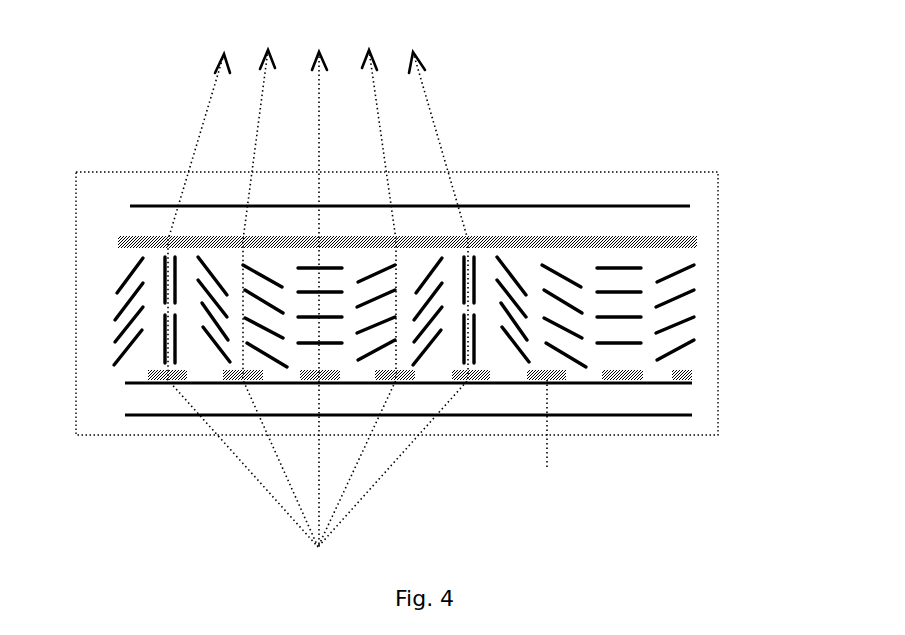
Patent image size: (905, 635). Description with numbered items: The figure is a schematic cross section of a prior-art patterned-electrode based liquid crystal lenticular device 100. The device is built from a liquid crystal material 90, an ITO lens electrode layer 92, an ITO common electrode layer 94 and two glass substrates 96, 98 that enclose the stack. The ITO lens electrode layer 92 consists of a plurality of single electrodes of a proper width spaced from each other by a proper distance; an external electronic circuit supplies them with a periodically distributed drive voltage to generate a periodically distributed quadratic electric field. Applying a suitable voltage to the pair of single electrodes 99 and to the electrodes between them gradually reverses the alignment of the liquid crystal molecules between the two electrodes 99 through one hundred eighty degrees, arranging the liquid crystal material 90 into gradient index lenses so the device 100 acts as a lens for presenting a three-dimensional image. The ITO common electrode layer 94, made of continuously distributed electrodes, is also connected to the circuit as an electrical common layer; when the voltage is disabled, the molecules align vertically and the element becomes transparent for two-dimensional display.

The patterned-electrode based liquid crystal lenticular device 100 is at (76, 172).
The glass substrate 98 is at (152, 205).
The ITO common electrode layer 94 is at (697, 243).
The liquid crystal material 90 is at (720, 311).
The ITO lens electrode layer 92 is at (692, 376).
The single electrodes 99 is at (174, 402).
The glass substrate 96 is at (672, 406).